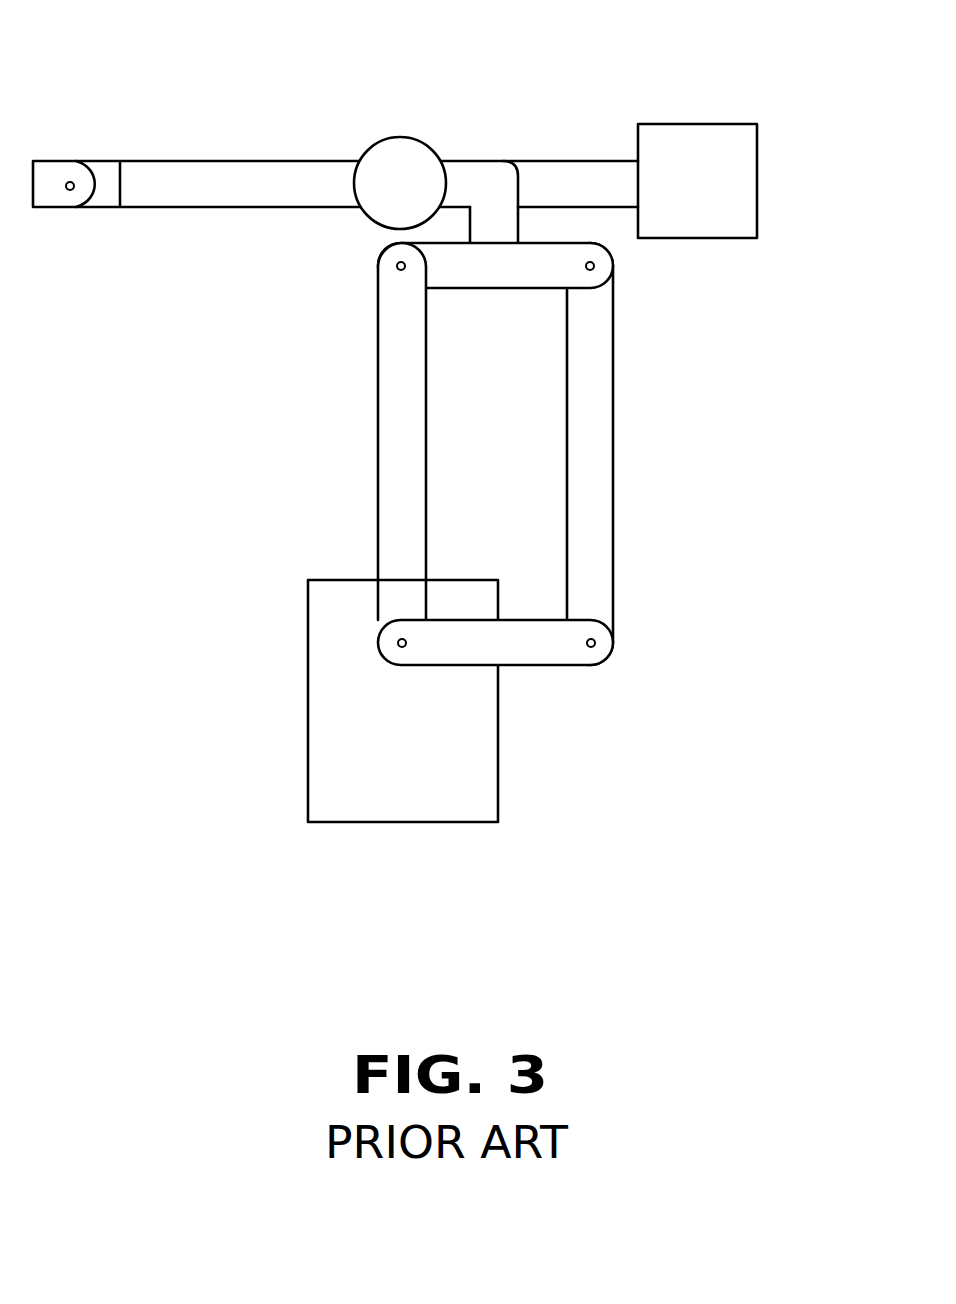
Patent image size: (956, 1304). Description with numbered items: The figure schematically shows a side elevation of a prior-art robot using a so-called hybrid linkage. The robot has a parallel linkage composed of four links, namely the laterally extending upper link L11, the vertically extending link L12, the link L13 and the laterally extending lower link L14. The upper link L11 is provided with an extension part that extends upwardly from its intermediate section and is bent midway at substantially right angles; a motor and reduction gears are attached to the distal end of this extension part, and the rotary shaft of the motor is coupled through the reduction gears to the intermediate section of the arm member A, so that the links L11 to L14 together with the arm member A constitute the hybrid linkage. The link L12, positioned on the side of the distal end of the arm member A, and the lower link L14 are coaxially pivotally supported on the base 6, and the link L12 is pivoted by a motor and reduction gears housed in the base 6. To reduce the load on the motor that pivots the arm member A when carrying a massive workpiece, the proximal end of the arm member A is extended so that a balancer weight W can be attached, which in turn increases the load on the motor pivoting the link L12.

The arm member A is at (215, 160).
The balancer weight W is at (757, 174).
The upper link L11 is at (458, 290).
The vertically extending link L12 is at (377, 483).
The link L13 is at (614, 420).
The lower link L14 is at (537, 665).
The base 6 is at (308, 768).